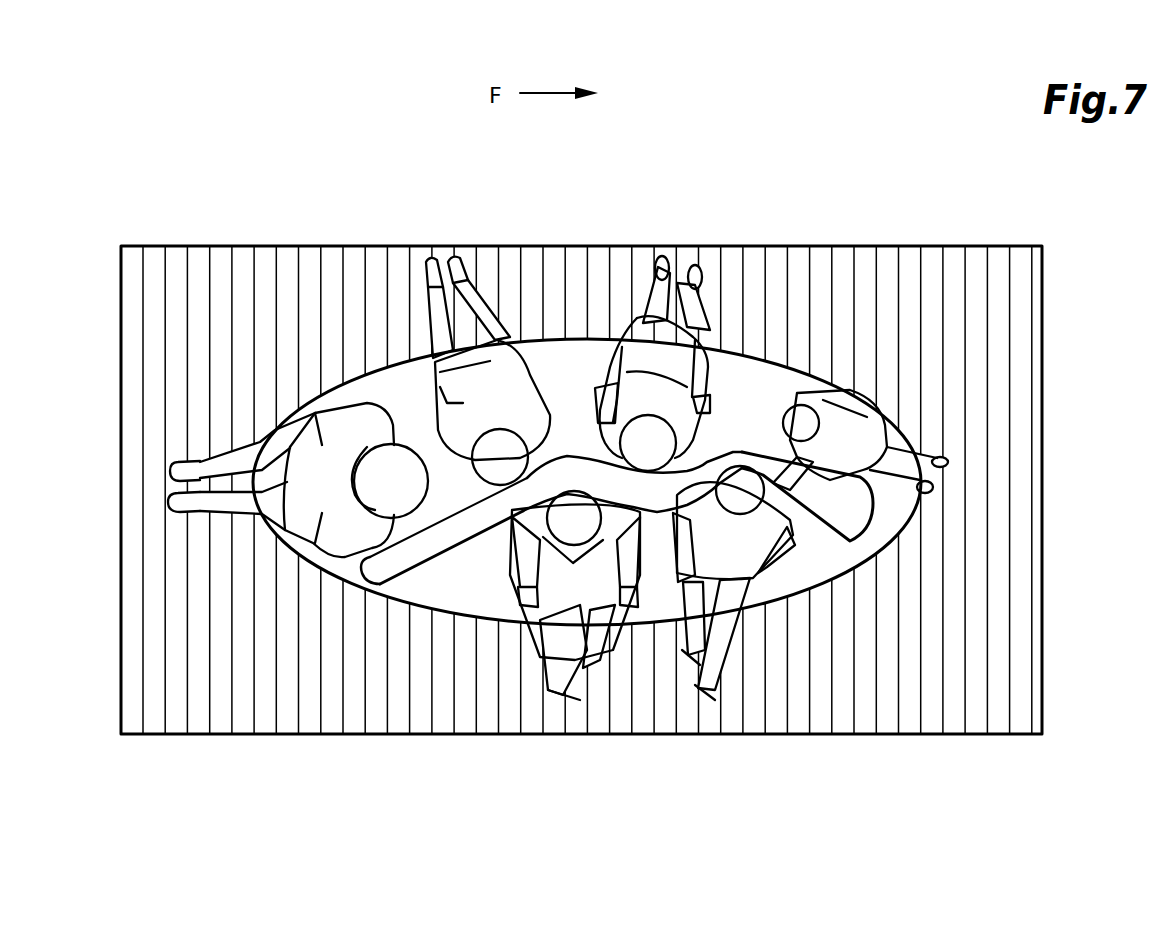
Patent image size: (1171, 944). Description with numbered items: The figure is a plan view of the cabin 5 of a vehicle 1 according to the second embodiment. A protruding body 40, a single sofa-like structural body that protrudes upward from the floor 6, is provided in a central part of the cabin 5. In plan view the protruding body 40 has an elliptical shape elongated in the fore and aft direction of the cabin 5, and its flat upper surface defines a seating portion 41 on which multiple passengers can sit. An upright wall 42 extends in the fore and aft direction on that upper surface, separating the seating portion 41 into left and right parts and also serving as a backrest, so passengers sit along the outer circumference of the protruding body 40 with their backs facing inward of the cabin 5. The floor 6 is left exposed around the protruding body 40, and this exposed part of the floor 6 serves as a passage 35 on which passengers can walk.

The vehicle 1 is at (953, 247).
The cabin 5 is at (866, 288).
The floor 6 is at (860, 672).
The passage 35 is at (748, 708).
The protruding body 40 is at (456, 585).
The seating portion 41 is at (555, 356).
The upright wall 42 is at (743, 430).